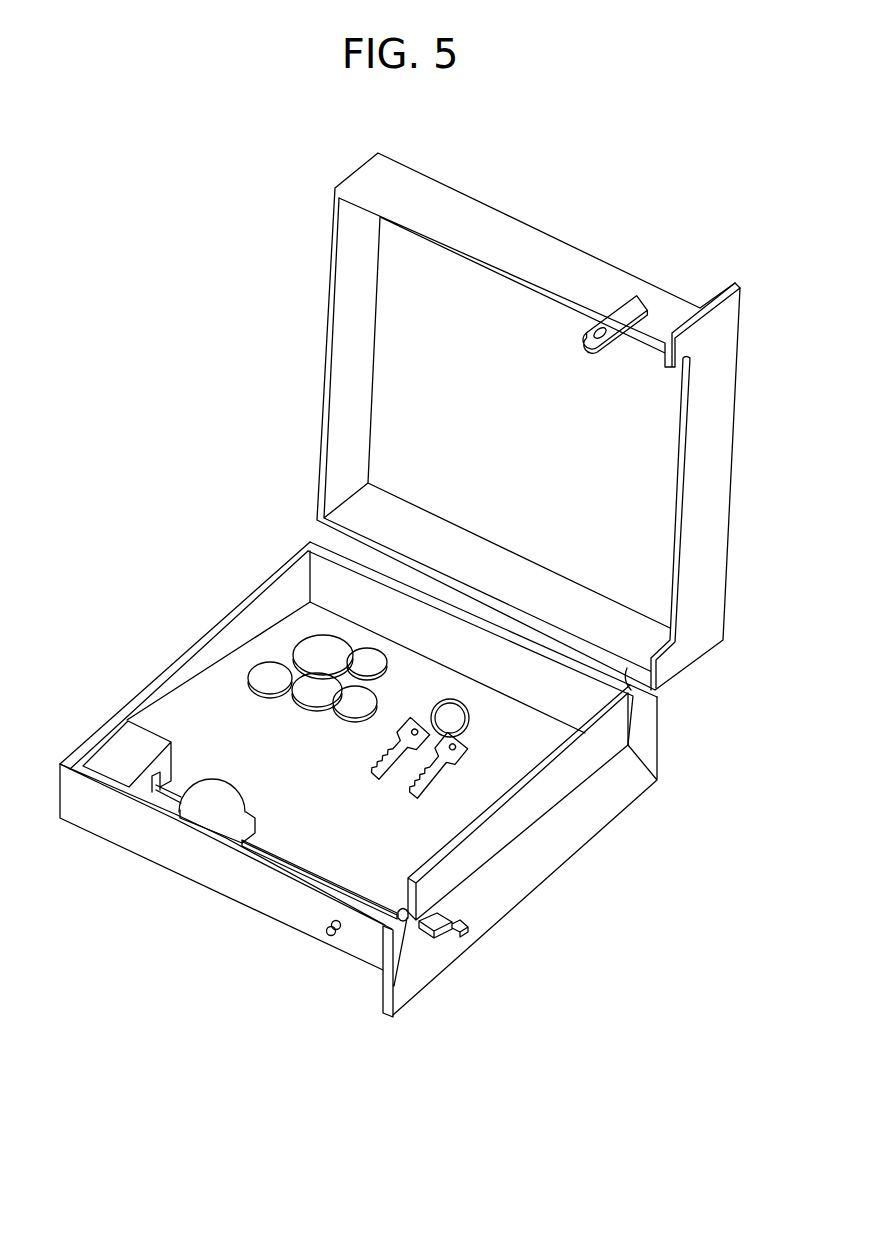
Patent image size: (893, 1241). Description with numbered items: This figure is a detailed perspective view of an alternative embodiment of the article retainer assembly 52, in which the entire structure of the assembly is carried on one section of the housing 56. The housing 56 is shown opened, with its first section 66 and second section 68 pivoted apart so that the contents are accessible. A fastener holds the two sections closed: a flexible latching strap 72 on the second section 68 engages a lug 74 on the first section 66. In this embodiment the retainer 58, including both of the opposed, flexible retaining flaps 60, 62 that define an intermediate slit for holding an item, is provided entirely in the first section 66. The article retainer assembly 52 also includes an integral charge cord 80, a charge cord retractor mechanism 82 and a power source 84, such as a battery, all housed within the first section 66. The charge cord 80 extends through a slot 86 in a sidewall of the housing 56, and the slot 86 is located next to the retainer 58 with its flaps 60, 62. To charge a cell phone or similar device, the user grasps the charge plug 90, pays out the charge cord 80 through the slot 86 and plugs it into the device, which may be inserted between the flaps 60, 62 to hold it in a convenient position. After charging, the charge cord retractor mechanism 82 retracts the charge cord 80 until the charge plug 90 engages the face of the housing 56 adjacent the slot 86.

The article retainer assembly 52 is at (207, 378).
The housing 56 is at (257, 585).
The retainer 58 is at (611, 790).
The retaining flap 60 is at (598, 735).
The retaining flap 62 is at (545, 805).
The first section 66 is at (195, 853).
The second section 68 is at (510, 235).
The flexible latching strap 72 is at (618, 305).
The lug 74 is at (326, 936).
The charge cord 80 is at (325, 878).
The charge cord retractor mechanism 82 is at (218, 800).
The power source 84 is at (112, 762).
The slot 86 is at (393, 985).
The charge plug 90 is at (440, 942).